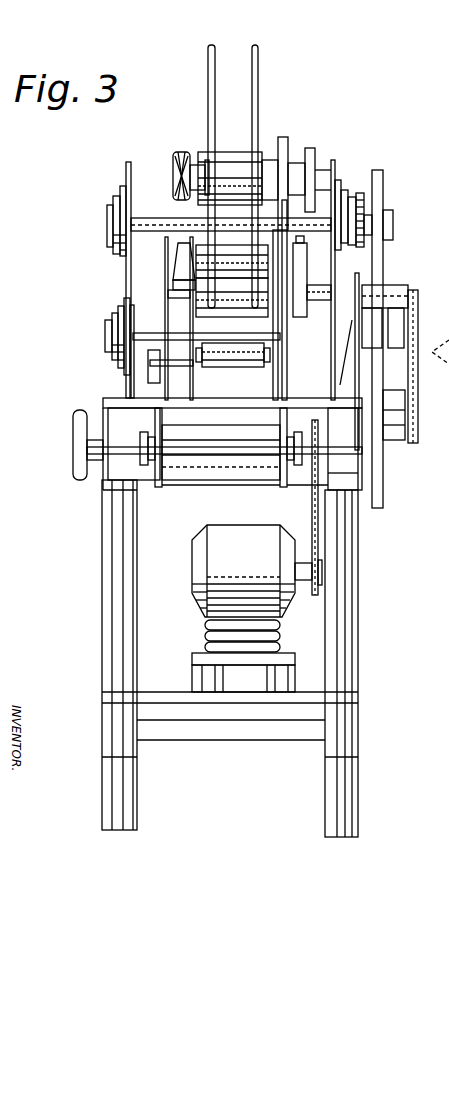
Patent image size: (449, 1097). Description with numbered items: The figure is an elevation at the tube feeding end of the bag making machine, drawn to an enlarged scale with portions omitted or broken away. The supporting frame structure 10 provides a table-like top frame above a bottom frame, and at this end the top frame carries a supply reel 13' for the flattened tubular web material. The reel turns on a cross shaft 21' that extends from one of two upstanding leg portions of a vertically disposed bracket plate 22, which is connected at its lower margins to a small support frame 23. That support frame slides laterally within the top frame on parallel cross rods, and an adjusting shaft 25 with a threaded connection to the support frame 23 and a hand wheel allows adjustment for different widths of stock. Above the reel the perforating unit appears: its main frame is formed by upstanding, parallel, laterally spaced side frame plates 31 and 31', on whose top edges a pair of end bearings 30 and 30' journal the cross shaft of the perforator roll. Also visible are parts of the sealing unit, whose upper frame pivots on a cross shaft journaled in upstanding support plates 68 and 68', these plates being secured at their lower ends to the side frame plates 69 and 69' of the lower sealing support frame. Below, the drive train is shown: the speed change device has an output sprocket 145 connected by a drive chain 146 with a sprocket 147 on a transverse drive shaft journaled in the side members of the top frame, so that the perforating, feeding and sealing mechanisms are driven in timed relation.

The supporting frame structure 10 is at (102, 588).
The reel 13' is at (251, 176).
The cross shaft 21' is at (216, 163).
The bracket plate 22 is at (283, 350).
The support frame 23 is at (156, 492).
The adjusting shaft 25 is at (122, 447).
The end bearing 30 is at (166, 318).
The end bearing 30' is at (305, 276).
The side frame plate 31 is at (225, 321).
The side frame plate 31' is at (238, 370).
The support plate 68 is at (107, 280).
The support plate 68' is at (351, 280).
The side frame plate 69 is at (109, 348).
The side frame plate 69' is at (360, 361).
The output sprocket 145 is at (322, 578).
The drive chain 146 is at (320, 530).
The sprocket 147 is at (309, 446).